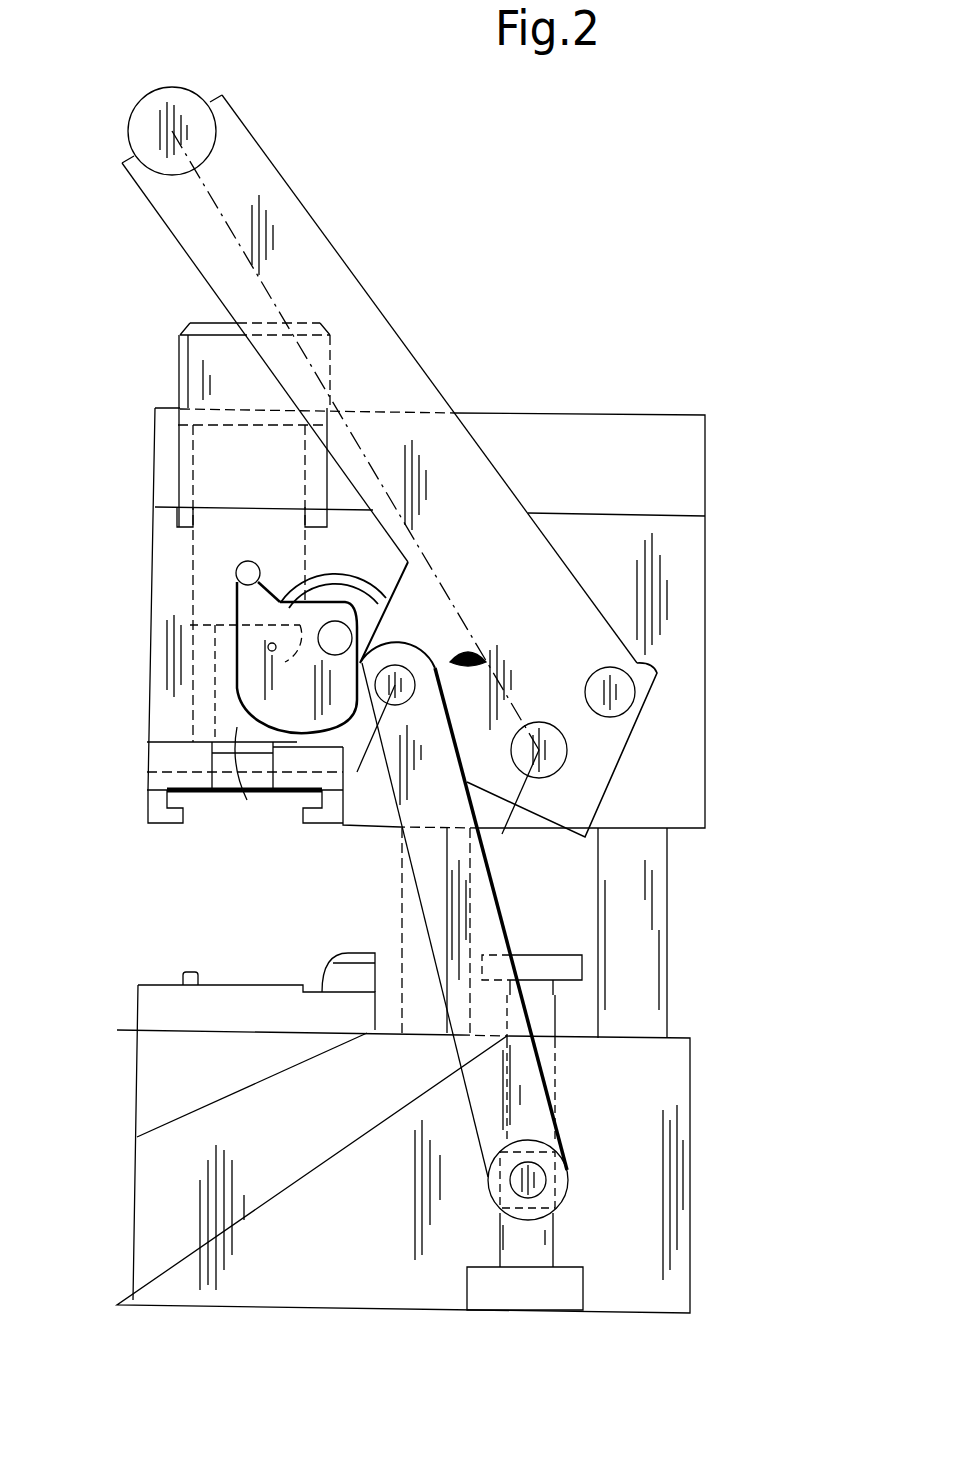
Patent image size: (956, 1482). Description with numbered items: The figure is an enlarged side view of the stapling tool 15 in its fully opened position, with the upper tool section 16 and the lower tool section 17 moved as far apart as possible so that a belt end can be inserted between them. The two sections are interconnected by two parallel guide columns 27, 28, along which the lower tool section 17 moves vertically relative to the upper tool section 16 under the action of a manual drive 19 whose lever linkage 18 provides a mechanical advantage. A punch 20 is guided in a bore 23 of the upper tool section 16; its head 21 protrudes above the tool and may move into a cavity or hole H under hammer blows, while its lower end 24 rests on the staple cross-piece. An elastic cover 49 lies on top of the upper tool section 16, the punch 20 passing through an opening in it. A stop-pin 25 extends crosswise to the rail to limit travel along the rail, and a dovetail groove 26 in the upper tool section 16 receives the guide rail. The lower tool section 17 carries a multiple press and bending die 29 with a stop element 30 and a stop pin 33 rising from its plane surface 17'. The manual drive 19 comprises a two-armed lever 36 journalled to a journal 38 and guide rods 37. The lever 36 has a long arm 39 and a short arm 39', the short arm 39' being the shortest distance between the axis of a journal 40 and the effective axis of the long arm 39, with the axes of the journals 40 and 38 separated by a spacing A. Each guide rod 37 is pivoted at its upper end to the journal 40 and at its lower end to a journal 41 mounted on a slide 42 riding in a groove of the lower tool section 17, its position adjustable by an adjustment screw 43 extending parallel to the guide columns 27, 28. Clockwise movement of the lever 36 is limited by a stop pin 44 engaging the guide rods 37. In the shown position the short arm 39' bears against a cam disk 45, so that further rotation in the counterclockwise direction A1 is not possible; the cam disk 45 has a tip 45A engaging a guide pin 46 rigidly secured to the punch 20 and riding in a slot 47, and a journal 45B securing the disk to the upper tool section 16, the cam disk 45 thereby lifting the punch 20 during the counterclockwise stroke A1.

The stapling tool 15 is at (495, 283).
The upper tool section 16 is at (707, 585).
The lower tool section 17 is at (435, 1171).
The surface of the lower tool section 17' is at (106, 962).
The lever linkage 18 is at (428, 667).
The manual drive 19 is at (318, 212).
The punch 20 is at (177, 382).
The head 21 is at (205, 323).
The bore 23 is at (237, 580).
The lower end of the punch 24 is at (255, 777).
The stop-pin 25 is at (227, 784).
The dovetail groove 26 is at (172, 753).
The guide column 27 is at (415, 945).
The guide column 28 is at (652, 882).
The multiple press and bending die 29 is at (155, 1013).
The stop element 30 is at (343, 977).
The stop pin 33 is at (182, 972).
The two-armed lever 36 is at (383, 312).
The guide rod 37 is at (480, 935).
The journal 38 is at (553, 755).
The long arm 39 is at (216, 132).
The short arm 39' is at (499, 655).
The journal 40 is at (393, 686).
The journal 41 is at (533, 1178).
The slide 42 is at (543, 1202).
The adjustment screw 43 is at (570, 963).
The stop pin 44 is at (620, 693).
The cam disk 45 is at (287, 601).
The tip 45A is at (257, 600).
The journal 45B is at (335, 636).
The guide pin 46 is at (238, 568).
The slot 47 is at (241, 596).
The elastic cover 49 is at (688, 475).
The cavity or hole H is at (183, 470).
The spacing A is at (503, 835).
The counterclockwise stroke arrow A1 is at (220, 43).